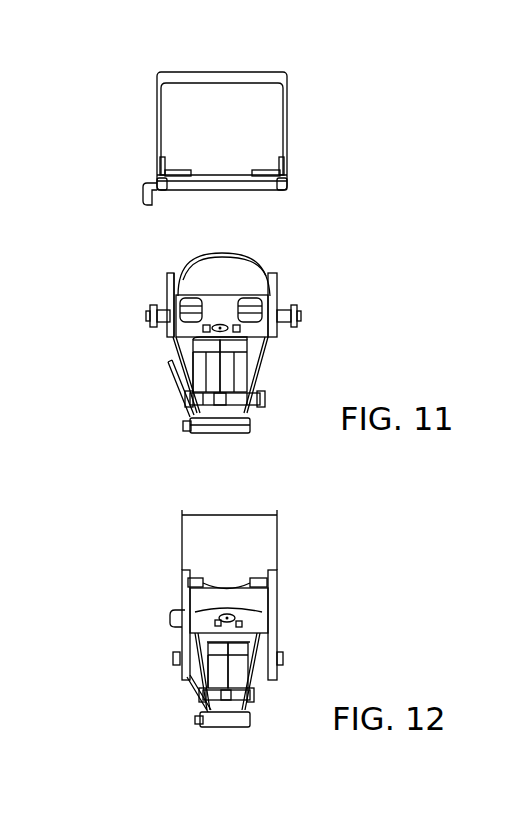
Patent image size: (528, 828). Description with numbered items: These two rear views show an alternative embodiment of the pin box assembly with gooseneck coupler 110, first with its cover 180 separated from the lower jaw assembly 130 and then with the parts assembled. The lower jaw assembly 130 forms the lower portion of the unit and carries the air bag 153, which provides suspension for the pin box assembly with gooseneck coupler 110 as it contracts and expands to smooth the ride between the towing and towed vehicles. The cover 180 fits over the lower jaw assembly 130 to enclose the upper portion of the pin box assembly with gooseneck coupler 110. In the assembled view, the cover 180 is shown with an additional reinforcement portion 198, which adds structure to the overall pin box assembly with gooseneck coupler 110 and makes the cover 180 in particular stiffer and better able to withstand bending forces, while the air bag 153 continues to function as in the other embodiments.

In FIG. 11, the pin box assembly with gooseneck coupler 110 is at (297, 255).
In FIG. 12, the pin box assembly with gooseneck coupler 110 is at (292, 580).
In FIG. 11, the lower jaw assembly 130 is at (305, 302).
In FIG. 12, the lower jaw assembly 130 is at (275, 642).
In FIG. 11, the air bag 153 is at (193, 277).
In FIG. 11, the cover 180 is at (298, 142).
In FIG. 12, the reinforcement portion 198 is at (210, 582).